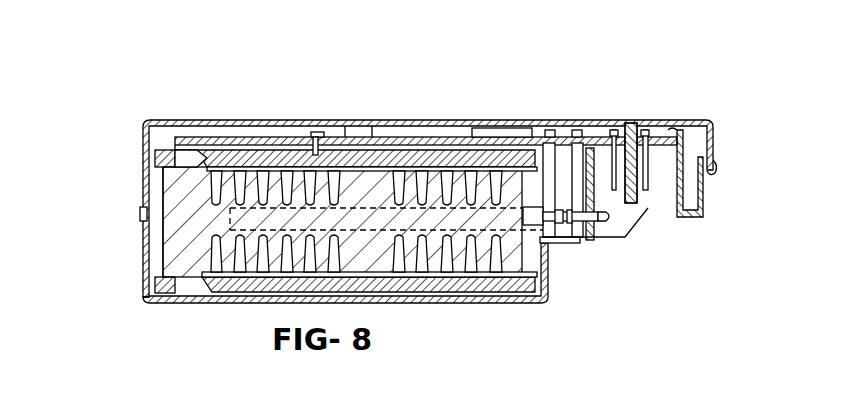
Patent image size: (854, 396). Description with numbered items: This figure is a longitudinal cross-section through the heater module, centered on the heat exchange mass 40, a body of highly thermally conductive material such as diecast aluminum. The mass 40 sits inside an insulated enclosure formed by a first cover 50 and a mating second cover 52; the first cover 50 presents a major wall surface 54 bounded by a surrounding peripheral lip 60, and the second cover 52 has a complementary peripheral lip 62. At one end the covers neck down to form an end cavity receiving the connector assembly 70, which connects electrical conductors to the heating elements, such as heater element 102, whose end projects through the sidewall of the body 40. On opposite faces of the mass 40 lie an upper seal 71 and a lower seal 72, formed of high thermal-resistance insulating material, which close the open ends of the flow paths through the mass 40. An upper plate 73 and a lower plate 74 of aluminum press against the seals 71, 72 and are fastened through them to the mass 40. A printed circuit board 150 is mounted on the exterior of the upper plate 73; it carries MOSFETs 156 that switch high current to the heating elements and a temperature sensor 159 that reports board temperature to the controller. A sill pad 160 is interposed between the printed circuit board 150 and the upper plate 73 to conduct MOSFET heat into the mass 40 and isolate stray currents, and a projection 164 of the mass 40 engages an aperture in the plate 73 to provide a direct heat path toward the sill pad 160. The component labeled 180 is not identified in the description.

The heat exchange mass 40 is at (160, 187).
The first cover 50 is at (545, 87).
The second cover 52 is at (550, 298).
The major wall surface 54 is at (443, 126).
The peripheral lip 60 is at (707, 118).
The peripheral lip 62 is at (143, 255).
The connector assembly 70 is at (643, 205).
The upper seal 71 is at (198, 150).
The lower seal 72 is at (225, 285).
The upper plate 73 is at (226, 149).
The lower plate 74 is at (248, 291).
The heater element 102 is at (503, 297).
The printed circuit board 150 is at (480, 128).
The MOSFETs 156 is at (535, 120).
The temperature sensor 159 is at (373, 130).
The sill pad 160 is at (253, 143).
The projection 164 is at (336, 130).
The fastener posts 180 is at (549, 243).